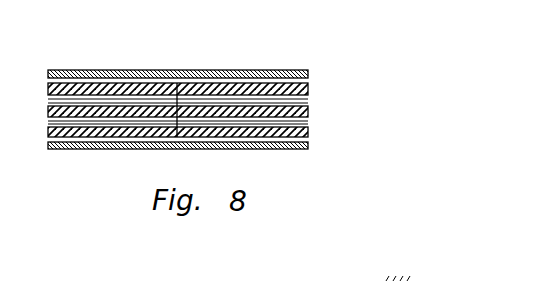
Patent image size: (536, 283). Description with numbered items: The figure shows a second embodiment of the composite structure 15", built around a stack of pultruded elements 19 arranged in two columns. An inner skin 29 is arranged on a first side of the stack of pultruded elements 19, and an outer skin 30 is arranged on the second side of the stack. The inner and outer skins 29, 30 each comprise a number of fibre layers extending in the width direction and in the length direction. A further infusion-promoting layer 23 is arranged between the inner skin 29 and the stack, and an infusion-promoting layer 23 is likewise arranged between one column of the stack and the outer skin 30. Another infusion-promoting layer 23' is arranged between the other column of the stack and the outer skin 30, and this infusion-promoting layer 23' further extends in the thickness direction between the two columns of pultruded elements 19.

The composite structure 15 is at (113, 68).
The pultruded elements 19 is at (158, 81).
The inner skin 29 is at (290, 72).
The infusion-promoting layer 23 is at (222, 79).
The infusion-promoting layer 23' is at (220, 122).
The outer skin 30 is at (297, 152).